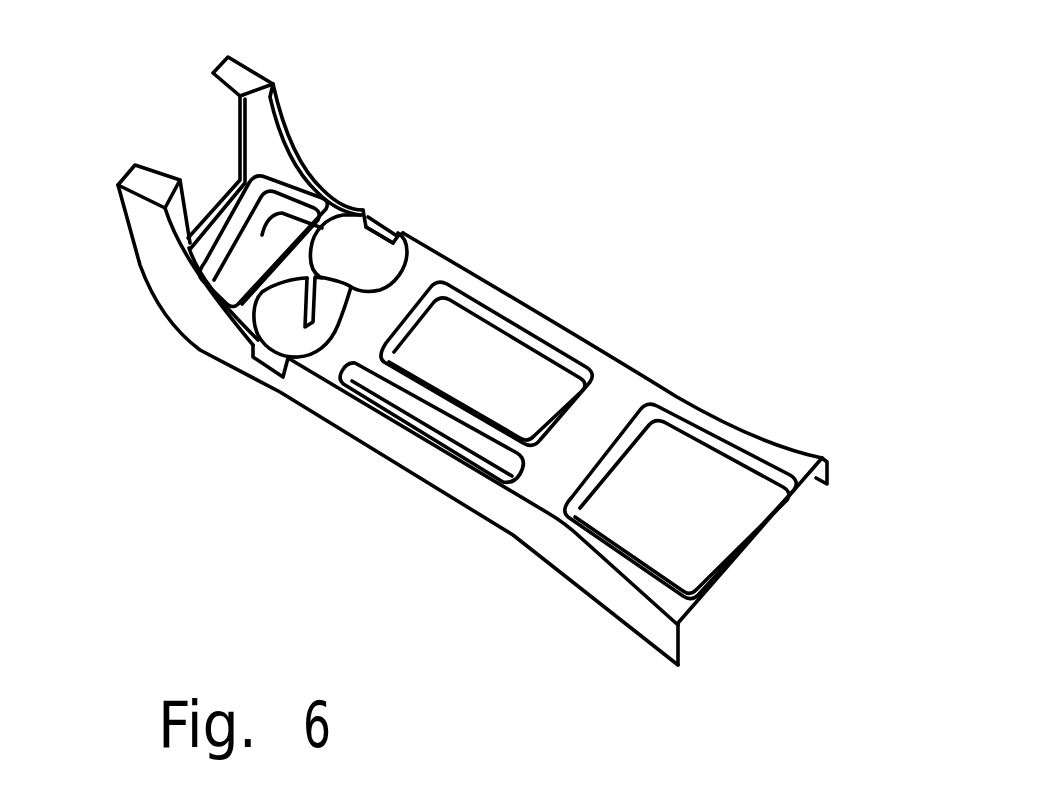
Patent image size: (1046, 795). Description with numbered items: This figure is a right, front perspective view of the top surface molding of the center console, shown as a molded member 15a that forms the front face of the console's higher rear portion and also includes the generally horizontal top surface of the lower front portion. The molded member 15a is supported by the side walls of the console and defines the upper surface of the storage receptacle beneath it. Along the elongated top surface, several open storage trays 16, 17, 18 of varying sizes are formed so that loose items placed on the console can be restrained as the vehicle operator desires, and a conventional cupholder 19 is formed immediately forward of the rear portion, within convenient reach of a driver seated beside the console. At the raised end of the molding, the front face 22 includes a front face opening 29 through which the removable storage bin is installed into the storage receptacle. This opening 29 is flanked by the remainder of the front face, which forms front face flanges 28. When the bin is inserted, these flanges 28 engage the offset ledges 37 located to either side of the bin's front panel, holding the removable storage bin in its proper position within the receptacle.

The molded member 15a is at (684, 324).
The open storage tray 16 is at (702, 455).
The open storage tray 17 is at (503, 353).
The open storage tray 18 is at (343, 375).
The cupholder 19 is at (397, 217).
The front face 22 is at (252, 158).
The front face flanges 28 is at (175, 203).
The front face opening 29 is at (182, 132).
The offset ledges 37 is at (590, 0).